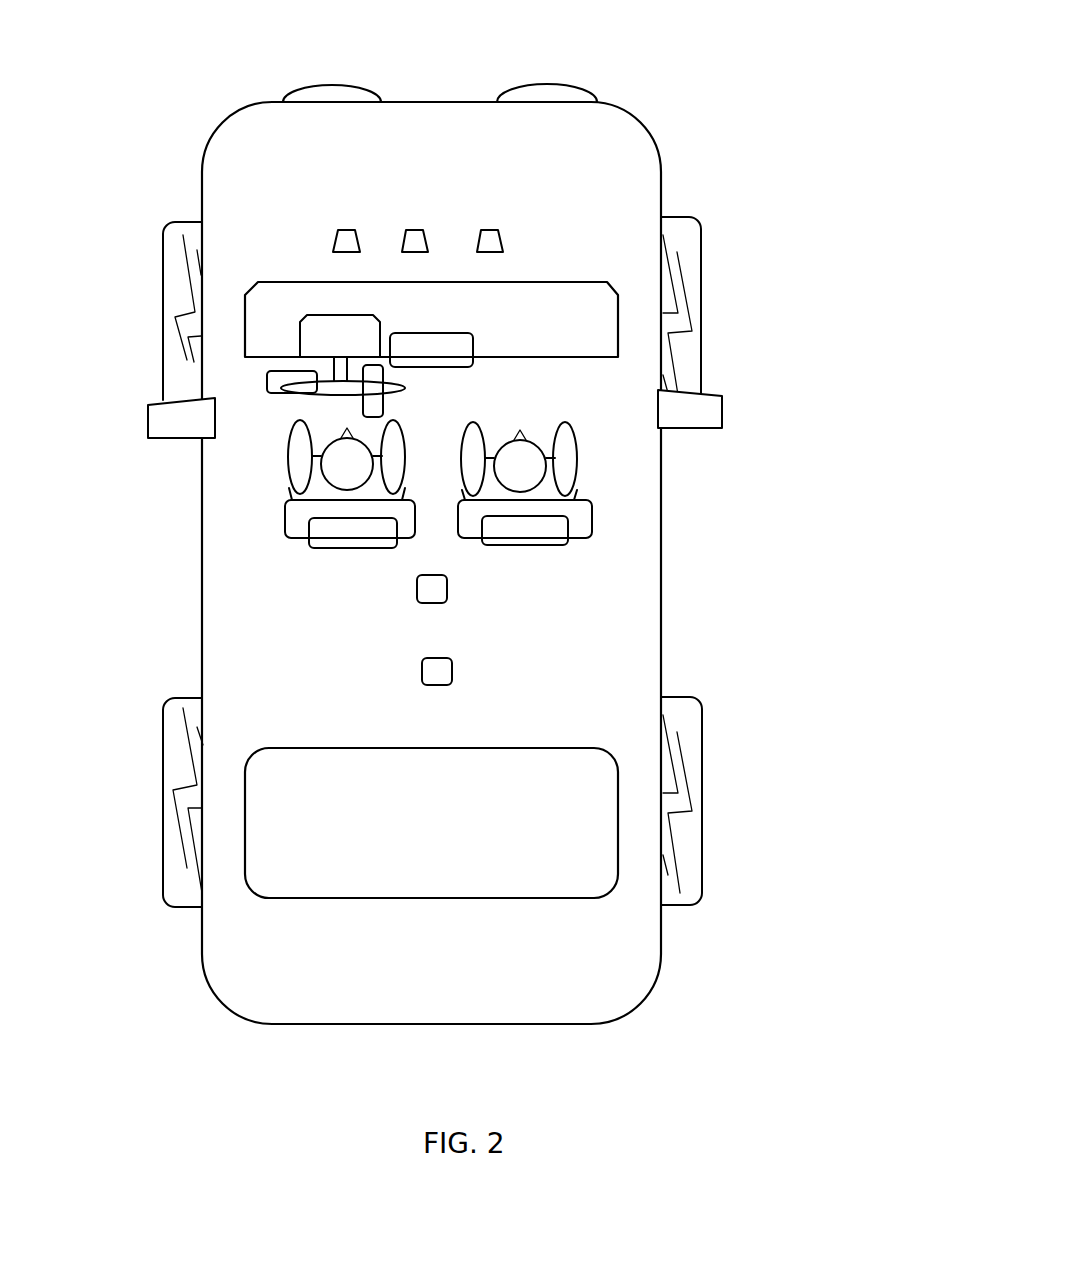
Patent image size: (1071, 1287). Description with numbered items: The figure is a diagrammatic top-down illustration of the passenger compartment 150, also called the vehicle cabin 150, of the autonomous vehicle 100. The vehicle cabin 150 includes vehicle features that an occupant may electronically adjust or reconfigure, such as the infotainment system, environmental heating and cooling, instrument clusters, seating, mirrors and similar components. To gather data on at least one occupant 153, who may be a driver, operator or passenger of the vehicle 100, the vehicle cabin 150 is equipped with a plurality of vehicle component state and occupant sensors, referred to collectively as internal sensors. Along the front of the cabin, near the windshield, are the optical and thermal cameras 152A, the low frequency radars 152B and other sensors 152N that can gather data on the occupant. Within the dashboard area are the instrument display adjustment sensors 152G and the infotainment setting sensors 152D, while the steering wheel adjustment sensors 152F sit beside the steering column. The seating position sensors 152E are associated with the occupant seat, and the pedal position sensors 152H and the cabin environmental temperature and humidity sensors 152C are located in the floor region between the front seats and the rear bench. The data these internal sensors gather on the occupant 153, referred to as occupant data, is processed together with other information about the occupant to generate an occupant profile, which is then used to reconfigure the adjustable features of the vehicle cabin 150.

The vehicle 100 is at (740, 533).
The passenger compartment 150 is at (549, 605).
The optical and thermal cameras 152A is at (337, 243).
The low frequency radars 152B is at (409, 240).
The other sensors 152N is at (493, 242).
The instrument display adjustment sensors 152G is at (320, 333).
The infotainment setting sensors 152D is at (457, 357).
The steering wheel adjustment sensors 152F is at (295, 396).
The pedal position sensors 152H is at (417, 588).
The temperature and humidity sensors 152C is at (422, 673).
The seating position sensors 152E is at (583, 523).
The occupant 153 is at (538, 465).